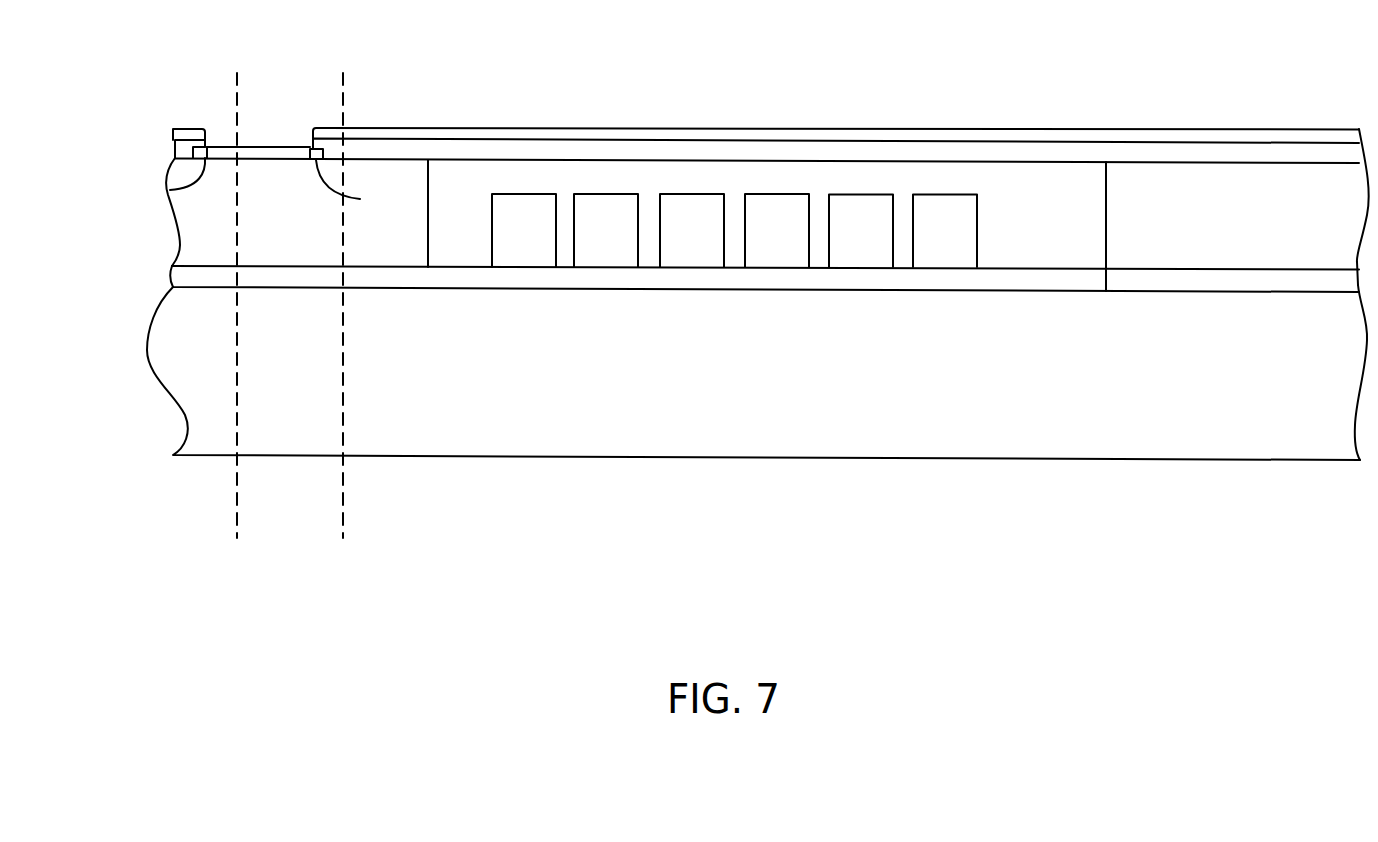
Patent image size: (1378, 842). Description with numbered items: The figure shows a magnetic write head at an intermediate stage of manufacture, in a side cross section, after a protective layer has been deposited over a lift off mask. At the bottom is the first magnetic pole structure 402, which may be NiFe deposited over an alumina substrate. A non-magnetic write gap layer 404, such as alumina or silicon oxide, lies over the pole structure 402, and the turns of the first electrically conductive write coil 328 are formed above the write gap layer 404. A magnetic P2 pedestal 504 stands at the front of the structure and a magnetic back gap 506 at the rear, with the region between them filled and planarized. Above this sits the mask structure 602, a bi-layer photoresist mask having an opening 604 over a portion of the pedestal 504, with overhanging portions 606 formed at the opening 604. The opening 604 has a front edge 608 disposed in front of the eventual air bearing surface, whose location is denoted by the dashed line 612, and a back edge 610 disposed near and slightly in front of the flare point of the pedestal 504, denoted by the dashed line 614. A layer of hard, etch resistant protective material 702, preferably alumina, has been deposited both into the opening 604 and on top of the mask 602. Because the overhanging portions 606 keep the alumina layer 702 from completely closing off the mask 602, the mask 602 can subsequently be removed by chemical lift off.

The first electrically conductive write coil 328 is at (686, 176).
The first magnetic pole structure 402 is at (794, 361).
The non-magnetic write gap layer 404 is at (872, 280).
The P2 pedestal 504 is at (330, 218).
The magnetic back gap 506 is at (1226, 205).
The mask structure 602 is at (174, 150).
The opening 604 is at (272, 147).
The overhanging portions 606 is at (207, 145).
The front edge 608 is at (170, 190).
The back edge 610 is at (361, 188).
The ABS location line 612 is at (237, 500).
The flare point line 614 is at (345, 505).
The protective alumina layer 702 is at (175, 130).